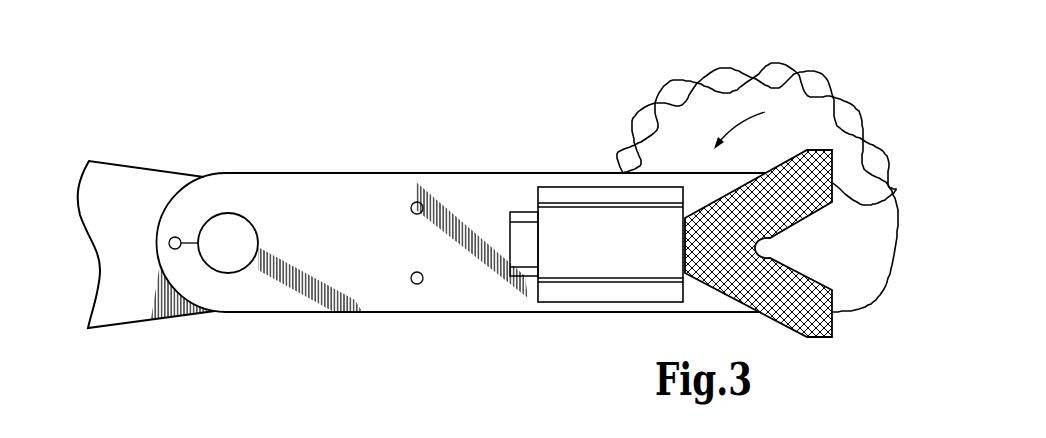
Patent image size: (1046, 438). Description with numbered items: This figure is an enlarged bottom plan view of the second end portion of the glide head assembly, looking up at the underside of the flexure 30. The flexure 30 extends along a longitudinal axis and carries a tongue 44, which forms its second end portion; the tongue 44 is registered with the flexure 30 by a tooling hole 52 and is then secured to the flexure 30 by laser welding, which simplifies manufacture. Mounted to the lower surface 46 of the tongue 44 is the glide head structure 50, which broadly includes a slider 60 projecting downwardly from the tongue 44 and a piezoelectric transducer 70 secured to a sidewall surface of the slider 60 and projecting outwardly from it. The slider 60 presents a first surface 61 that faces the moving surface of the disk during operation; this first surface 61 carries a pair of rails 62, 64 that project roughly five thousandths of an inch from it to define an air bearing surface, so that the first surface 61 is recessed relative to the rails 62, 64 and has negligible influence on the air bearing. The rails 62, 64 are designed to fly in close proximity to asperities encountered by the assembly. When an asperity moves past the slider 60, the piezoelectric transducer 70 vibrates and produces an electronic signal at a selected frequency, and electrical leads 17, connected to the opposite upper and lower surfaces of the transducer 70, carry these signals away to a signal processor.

The electrical leads 17 is at (833, 82).
The flexure 30 is at (147, 187).
The tongue 44 is at (438, 195).
The lower surface 46 is at (350, 249).
The glide head structure 50 is at (754, 123).
The tooling hole 52 is at (227, 232).
The slider 60 is at (573, 255).
The first surface 61 is at (610, 261).
The rail 62 is at (600, 192).
The rail 64 is at (622, 292).
The piezoelectric transducer 70 is at (785, 327).